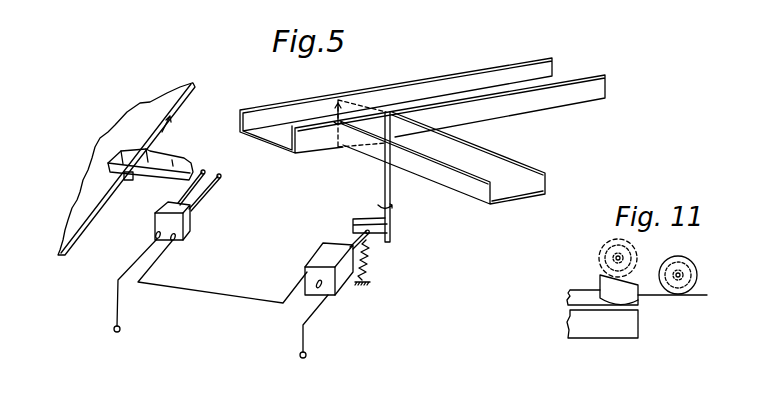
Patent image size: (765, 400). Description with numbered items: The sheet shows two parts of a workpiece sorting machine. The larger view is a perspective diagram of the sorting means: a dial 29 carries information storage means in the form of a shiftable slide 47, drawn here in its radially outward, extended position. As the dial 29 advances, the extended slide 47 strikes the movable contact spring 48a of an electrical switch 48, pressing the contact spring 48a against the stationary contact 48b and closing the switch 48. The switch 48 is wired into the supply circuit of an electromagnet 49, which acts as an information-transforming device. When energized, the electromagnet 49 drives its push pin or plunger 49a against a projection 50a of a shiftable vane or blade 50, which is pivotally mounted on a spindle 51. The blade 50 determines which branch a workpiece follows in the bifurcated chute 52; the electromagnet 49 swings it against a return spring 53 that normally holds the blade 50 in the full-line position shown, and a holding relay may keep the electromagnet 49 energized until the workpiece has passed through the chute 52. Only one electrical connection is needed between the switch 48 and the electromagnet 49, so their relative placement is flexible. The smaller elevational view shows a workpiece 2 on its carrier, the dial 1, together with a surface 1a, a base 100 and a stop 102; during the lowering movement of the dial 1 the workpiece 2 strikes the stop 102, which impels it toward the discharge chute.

In FIG. 5, the dial 29 is at (88, 210).
In FIG. 5, the shiftable slide 47 is at (157, 168).
In FIG. 5, the electrical switch 48 is at (190, 222).
In FIG. 5, the movable contact spring 48a is at (200, 173).
In FIG. 5, the stationary contact 48b is at (219, 180).
In FIG. 5, the electromagnet 49 is at (342, 279).
In FIG. 5, the push pin or plunger 49a is at (350, 244).
In FIG. 5, the shiftable vane or blade 50 is at (358, 103).
In FIG. 5, the projection 50a is at (392, 237).
In FIG. 5, the spindle 51 is at (391, 189).
In FIG. 5, the bifurcated chute 52 is at (495, 138).
In FIG. 5, the return spring 53 is at (370, 262).
In FIG. 11, the dial 1 is at (577, 290).
In FIG. 11, the support surface 1a is at (640, 299).
In FIG. 11, the workpiece 2 is at (632, 250).
In FIG. 11, the base 100 is at (623, 330).
In FIG. 11, the stop 102 is at (612, 292).